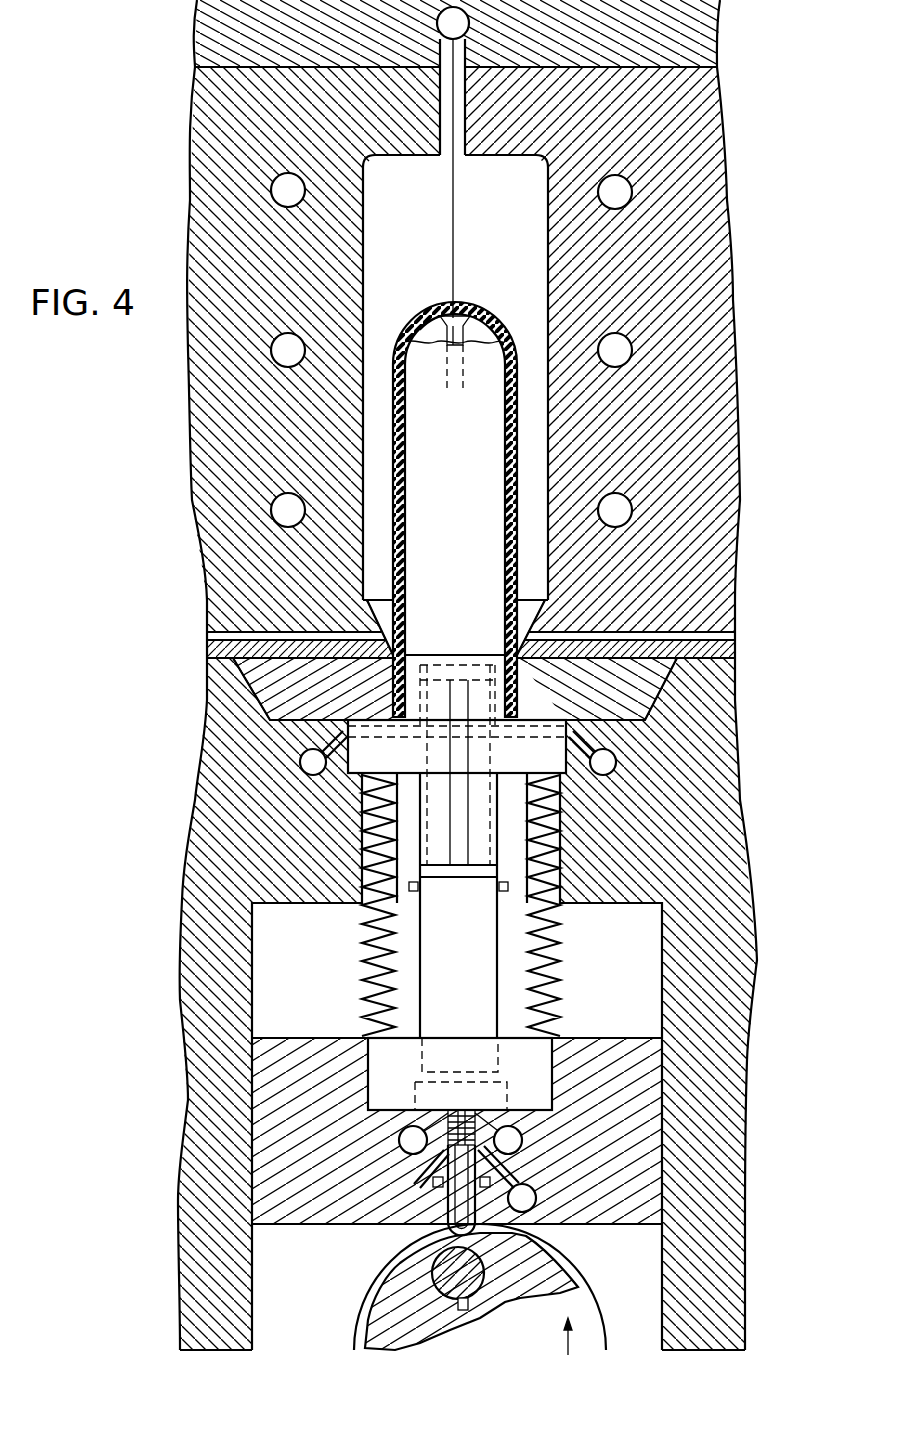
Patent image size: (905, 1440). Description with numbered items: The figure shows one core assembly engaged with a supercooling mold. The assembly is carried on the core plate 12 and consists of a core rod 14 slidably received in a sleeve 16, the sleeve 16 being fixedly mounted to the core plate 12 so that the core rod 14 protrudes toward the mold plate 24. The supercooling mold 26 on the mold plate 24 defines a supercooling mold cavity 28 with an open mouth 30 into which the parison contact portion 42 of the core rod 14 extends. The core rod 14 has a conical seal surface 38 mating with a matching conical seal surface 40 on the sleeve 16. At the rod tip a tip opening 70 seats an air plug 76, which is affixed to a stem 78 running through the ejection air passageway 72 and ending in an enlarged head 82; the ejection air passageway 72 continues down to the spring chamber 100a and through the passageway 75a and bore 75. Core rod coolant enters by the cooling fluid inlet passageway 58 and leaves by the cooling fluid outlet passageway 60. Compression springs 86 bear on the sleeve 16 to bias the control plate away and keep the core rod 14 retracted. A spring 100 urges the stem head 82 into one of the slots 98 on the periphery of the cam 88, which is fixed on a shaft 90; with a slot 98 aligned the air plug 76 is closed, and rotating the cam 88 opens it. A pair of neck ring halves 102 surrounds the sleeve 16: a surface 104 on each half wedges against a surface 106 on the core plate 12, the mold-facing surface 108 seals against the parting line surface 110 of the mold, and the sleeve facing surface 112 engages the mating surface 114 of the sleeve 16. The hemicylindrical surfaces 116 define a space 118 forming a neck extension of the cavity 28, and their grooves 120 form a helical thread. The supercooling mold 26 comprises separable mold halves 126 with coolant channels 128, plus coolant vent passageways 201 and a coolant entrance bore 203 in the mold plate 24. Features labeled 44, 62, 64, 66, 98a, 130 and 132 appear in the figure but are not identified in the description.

The core plate 12 is at (453, 675).
The core rod 14 is at (400, 458).
The sleeve 16 is at (356, 776).
The mold plate 24 is at (200, 26).
The supercooling mold 26 is at (207, 478).
The supercooling mold cavity 28 is at (365, 318).
The open mouth 30 is at (532, 628).
The conical seal surface 38 is at (425, 660).
The conical seal surface 40 is at (357, 648).
The parison contact portion 42 is at (464, 493).
The cavity 44 is at (455, 405).
The cooling fluid inlet passageway 58 is at (523, 1139).
The cooling fluid outlet passageway 60 is at (399, 1138).
The rod 62 is at (498, 830).
The ball 64 is at (300, 762).
The pin 66 is at (320, 784).
The tip opening 70 is at (432, 312).
The ejection air passageway 72 is at (440, 392).
The bore 75 is at (537, 1198).
The passageway 75a is at (503, 1168).
The air plug 76 is at (454, 314).
The stem 78 is at (462, 1112).
The enlarged head 82 is at (452, 1210).
The compression springs 86 is at (376, 972).
The cam 88 is at (598, 1322).
The shaft 90 is at (502, 1305).
The slot 98 is at (400, 1262).
The cam notch 98a is at (542, 1246).
The spring 100 is at (432, 1160).
The spring chamber 100a is at (433, 1184).
The neck ring halves 102 is at (225, 675).
The surface 104 is at (262, 700).
The surface 106 is at (262, 719).
The mold-facing surface 108 is at (207, 652).
The parting line surface 110 is at (290, 655).
The sleeve facing surface 112 is at (302, 734).
The mating surface 114 is at (372, 728).
The hemicylindrical surface 116 is at (393, 678).
The space 118 is at (628, 656).
The grooves 120 is at (400, 716).
The mold halves 126 is at (215, 112).
The coolant channels 128 is at (275, 190).
The tube wall 130 is at (395, 400).
The packing 132 is at (525, 696).
The coolant vent passageways 201 is at (207, 636).
The coolant entrance bore 203 is at (462, 24).